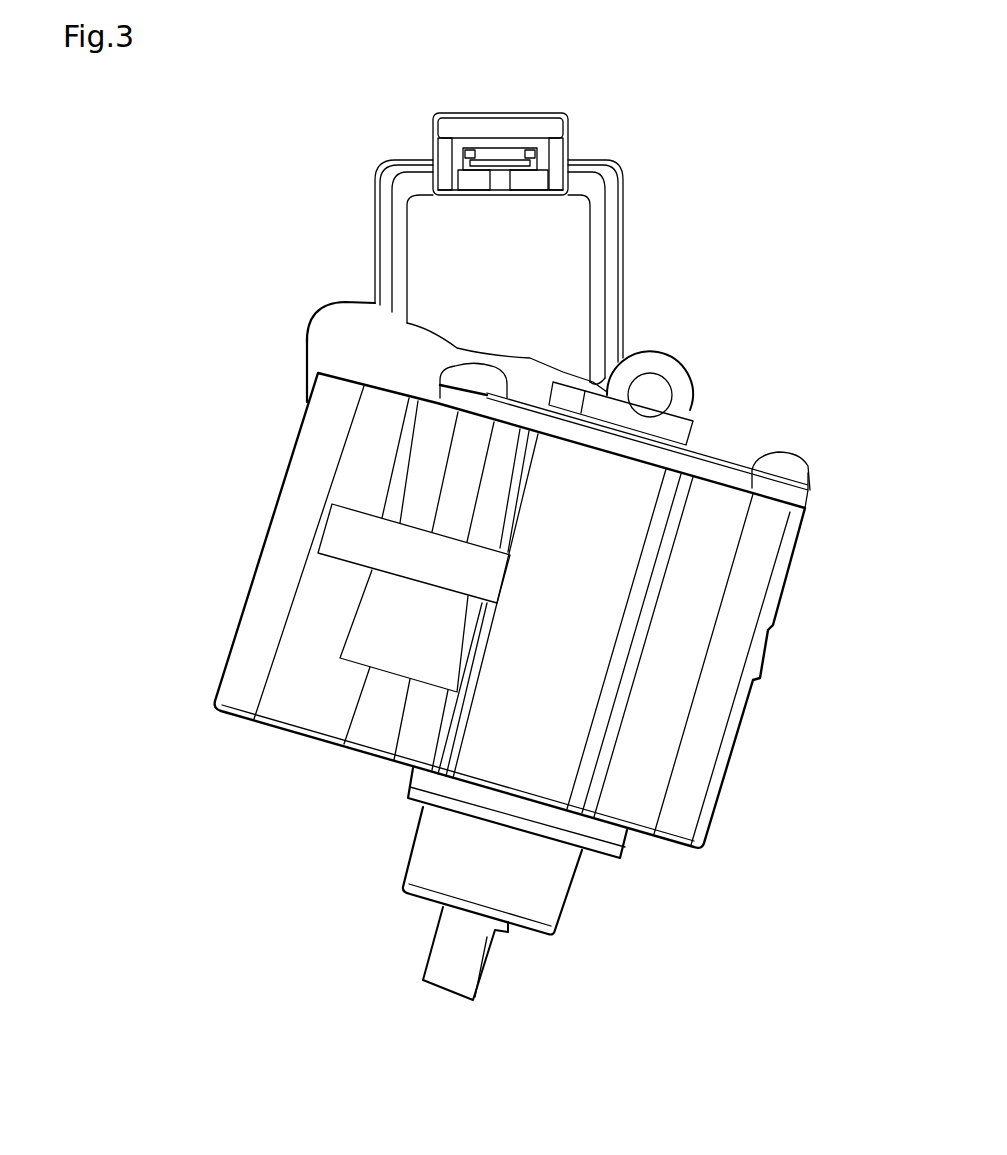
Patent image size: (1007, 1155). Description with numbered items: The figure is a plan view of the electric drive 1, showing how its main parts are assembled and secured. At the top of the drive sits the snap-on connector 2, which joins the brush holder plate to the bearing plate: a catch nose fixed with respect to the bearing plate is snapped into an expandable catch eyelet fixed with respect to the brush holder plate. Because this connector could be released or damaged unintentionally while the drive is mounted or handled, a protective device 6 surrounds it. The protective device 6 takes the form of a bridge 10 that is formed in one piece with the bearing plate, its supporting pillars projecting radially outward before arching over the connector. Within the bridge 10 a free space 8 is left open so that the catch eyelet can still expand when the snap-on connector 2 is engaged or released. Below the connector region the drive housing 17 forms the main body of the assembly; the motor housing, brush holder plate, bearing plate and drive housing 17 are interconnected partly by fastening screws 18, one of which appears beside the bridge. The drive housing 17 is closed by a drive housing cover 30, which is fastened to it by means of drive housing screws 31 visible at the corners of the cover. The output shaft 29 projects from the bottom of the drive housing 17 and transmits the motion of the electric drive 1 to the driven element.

The electric drive 1 is at (315, 145).
The snap-on connector 2 is at (440, 168).
The protective device 6 is at (560, 110).
The free space 8 is at (503, 150).
The bridge 10 is at (475, 127).
The drive housing 17 is at (695, 775).
The fastening screws 18 is at (678, 393).
The output shaft 29 is at (448, 973).
The drive housing cover 30 is at (790, 492).
The drive housing screws 31 is at (460, 378).